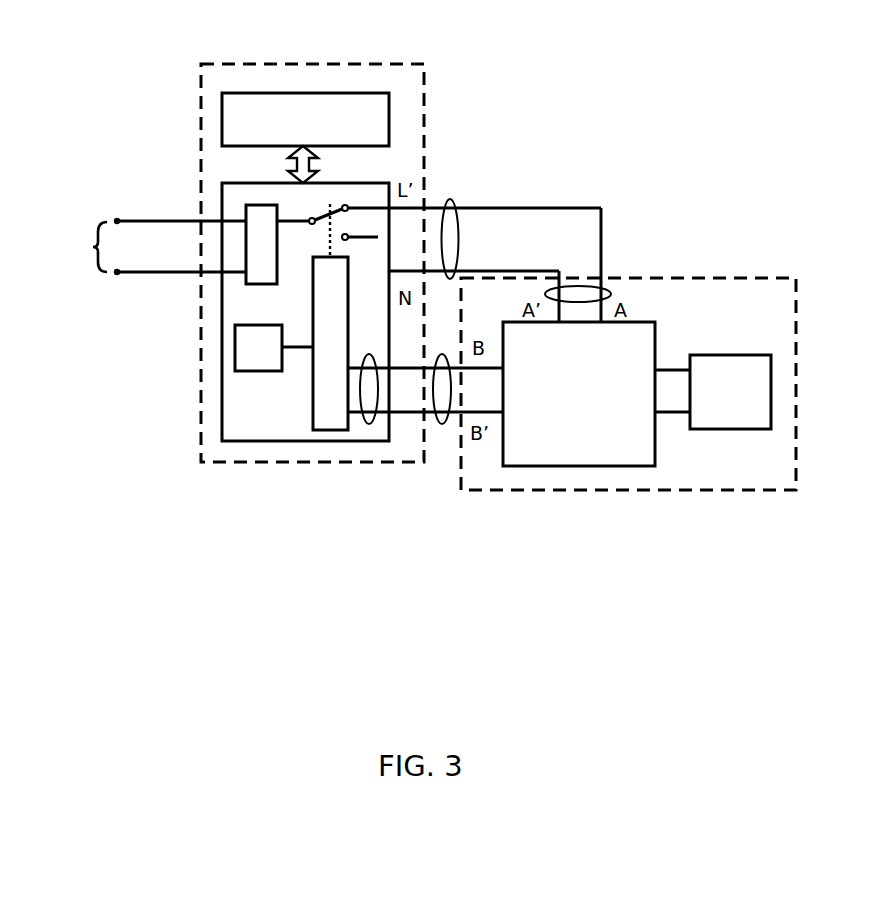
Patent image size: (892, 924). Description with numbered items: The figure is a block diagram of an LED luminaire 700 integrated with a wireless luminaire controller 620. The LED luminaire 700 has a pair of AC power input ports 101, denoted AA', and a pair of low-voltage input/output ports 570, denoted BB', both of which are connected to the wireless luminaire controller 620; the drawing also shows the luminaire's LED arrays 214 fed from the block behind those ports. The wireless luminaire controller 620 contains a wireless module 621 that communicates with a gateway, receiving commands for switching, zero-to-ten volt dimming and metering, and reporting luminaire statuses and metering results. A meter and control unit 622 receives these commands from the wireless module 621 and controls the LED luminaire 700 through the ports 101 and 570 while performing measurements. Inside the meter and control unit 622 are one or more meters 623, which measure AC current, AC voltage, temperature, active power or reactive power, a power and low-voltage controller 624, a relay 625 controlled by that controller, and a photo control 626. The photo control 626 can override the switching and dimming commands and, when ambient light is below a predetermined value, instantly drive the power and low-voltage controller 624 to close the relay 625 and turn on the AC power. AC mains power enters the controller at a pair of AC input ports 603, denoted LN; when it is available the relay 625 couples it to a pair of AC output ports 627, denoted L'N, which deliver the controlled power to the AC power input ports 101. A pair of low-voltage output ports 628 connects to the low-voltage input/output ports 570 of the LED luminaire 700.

The pair of AC input ports 603 is at (97, 222).
The wireless luminaire controller 620 is at (199, 426).
The wireless module 621 is at (392, 117).
The meter and control unit 622 is at (277, 445).
The meters 623 is at (245, 205).
The power and low-voltage controller 624 is at (328, 432).
The relay 625 is at (323, 230).
The photo control 626 is at (233, 348).
The pair of AC output ports 627 is at (453, 205).
The pair of low-voltage output ports 628 is at (371, 425).
The pair of low-voltage input/output ports 570 is at (443, 425).
The pair of AC power input ports 101 is at (611, 290).
The LED luminaire 700 is at (720, 276).
The LED arrays 214 is at (727, 353).